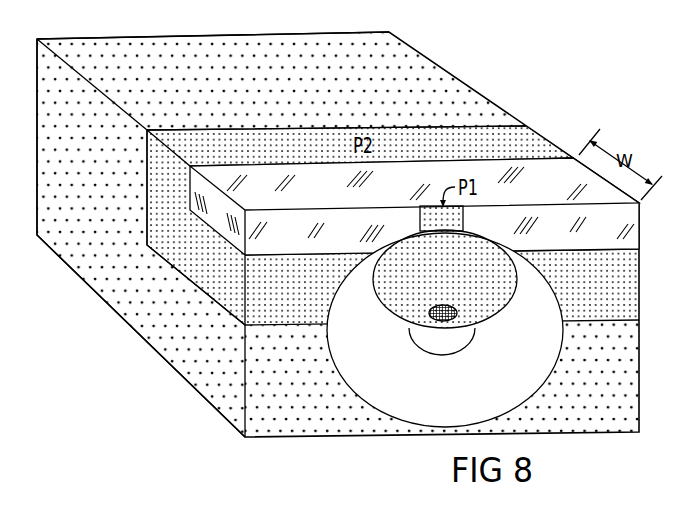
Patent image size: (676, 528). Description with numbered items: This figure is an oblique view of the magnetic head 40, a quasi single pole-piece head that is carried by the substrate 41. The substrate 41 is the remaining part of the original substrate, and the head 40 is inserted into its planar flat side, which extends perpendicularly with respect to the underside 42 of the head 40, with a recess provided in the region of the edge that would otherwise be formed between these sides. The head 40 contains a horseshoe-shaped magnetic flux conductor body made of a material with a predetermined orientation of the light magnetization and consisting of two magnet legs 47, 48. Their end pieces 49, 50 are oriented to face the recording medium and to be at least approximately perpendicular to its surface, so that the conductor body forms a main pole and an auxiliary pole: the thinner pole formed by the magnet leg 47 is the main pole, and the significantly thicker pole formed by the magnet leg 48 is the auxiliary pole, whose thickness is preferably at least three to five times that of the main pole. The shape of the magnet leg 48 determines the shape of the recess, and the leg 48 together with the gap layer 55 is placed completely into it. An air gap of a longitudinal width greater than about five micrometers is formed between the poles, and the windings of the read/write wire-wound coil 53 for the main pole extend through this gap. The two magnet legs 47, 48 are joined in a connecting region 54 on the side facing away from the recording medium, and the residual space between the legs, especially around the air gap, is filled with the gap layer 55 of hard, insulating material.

The magnetic head 40 is at (558, 103).
The substrate 41 is at (141, 238).
The underside 42 is at (281, 81).
The magnet leg 47 is at (398, 287).
The magnet leg 48 is at (200, 263).
The end piece 49 is at (463, 220).
The end piece 50 is at (163, 178).
The read/write wire-wound coil 53 is at (418, 396).
The connecting region 54 is at (430, 315).
The gap layer 55 is at (414, 297).